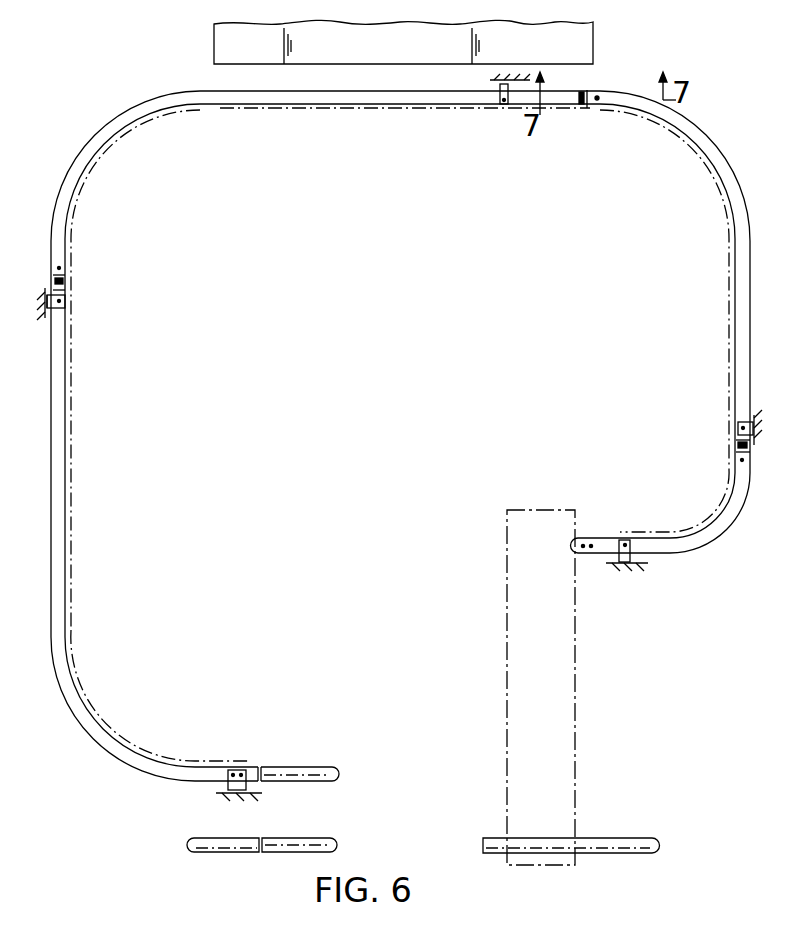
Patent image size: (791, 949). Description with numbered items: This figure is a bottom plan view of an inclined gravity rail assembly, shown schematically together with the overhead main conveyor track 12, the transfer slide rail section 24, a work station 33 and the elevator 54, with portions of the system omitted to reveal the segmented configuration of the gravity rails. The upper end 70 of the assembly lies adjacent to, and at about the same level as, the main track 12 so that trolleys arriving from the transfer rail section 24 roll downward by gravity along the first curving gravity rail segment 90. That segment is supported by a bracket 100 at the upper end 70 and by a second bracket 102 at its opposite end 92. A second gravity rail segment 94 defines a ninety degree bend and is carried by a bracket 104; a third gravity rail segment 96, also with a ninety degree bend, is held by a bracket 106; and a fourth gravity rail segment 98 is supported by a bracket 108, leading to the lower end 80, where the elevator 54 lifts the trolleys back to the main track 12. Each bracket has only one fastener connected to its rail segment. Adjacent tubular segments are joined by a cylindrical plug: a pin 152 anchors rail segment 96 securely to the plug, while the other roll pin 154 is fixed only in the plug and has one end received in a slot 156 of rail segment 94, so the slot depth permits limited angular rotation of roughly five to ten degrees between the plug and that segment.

The main conveyor track 12 is at (230, 838).
The transfer slide rail section 24 is at (312, 767).
The work station 33 is at (405, 66).
The elevator 54 is at (576, 660).
The upper end of the gravity rail assembly 70 is at (259, 766).
The lower end of the gravity rail assembly 80 is at (585, 537).
The first curving gravity rail segment 90 is at (126, 738).
The opposite end of the first gravity rail segment 92 is at (68, 375).
The second gravity rail segment 94 is at (290, 105).
The third gravity rail segment 96 is at (738, 235).
The fourth gravity rail segment 98 is at (690, 536).
The bracket 100 is at (228, 774).
The second bracket 102 is at (60, 309).
The bracket 104 is at (500, 98).
The bracket 106 is at (736, 422).
The bracket 108 is at (628, 546).
The pin 152 is at (598, 102).
The roll pin 154 is at (582, 93).
The slot 156 is at (586, 105).